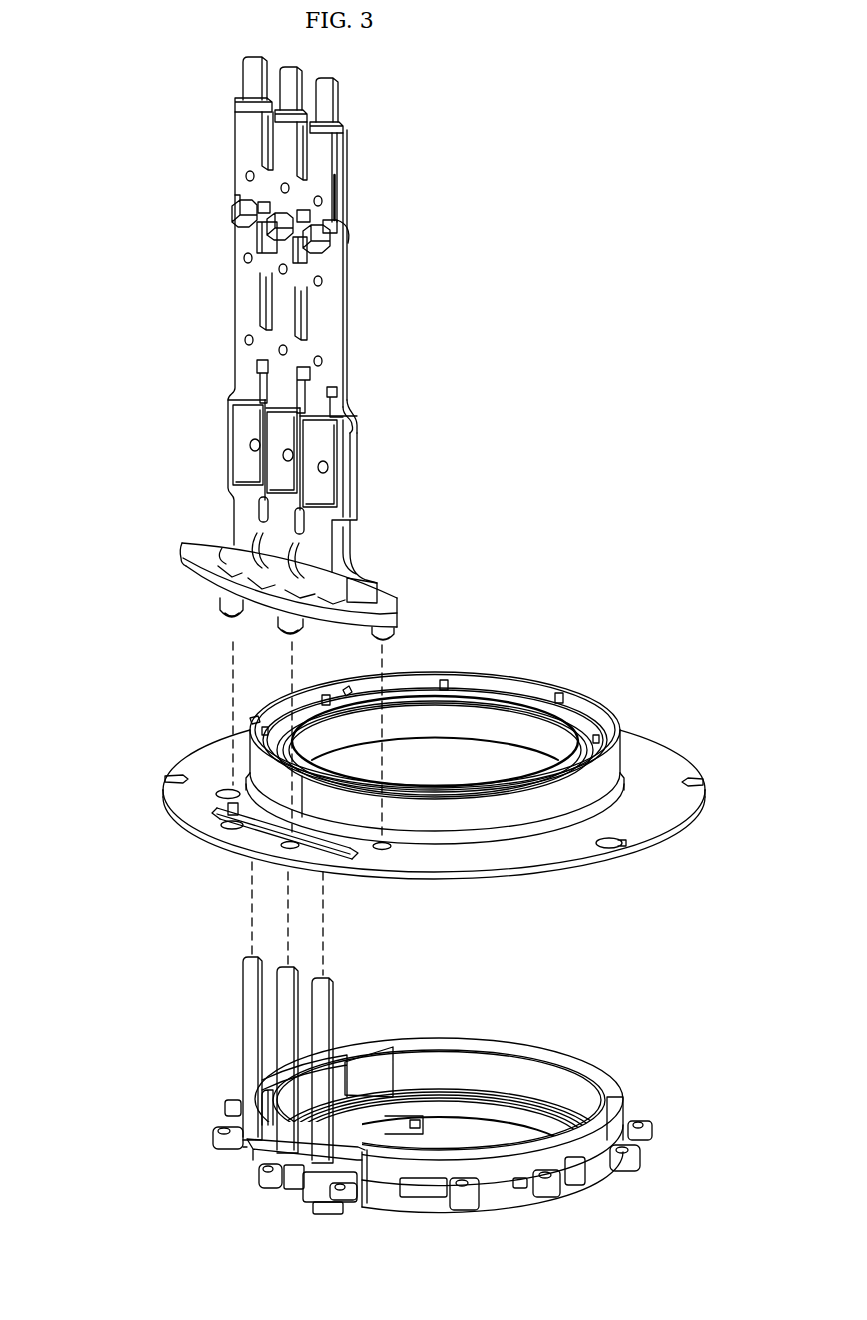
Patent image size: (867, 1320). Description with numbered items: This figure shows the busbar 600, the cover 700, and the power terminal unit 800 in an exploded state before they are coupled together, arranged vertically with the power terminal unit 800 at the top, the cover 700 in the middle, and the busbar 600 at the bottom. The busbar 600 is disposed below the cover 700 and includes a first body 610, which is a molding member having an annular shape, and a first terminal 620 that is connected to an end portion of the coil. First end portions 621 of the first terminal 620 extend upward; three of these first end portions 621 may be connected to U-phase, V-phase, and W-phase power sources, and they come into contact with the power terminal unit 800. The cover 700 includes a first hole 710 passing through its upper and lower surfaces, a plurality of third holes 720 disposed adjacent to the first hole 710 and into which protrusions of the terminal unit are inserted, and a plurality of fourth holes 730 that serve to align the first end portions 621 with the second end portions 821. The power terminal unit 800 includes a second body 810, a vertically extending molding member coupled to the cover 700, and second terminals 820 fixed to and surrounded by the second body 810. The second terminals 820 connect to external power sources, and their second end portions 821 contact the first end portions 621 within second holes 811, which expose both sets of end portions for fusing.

The power terminal unit 800 is at (222, 285).
The second body 810 is at (252, 150).
The second holes 811 is at (340, 428).
The second terminals 820 is at (323, 107).
The second end portions 821 is at (323, 473).
The cover 700 is at (148, 790).
The first hole 710 is at (355, 850).
The third holes 720 is at (228, 790).
The fourth holes 730 is at (255, 720).
The busbar 600 is at (195, 1145).
The first body 610 is at (505, 1187).
The first terminal 620 is at (204, 1060).
The first end portions 621 is at (318, 1035).